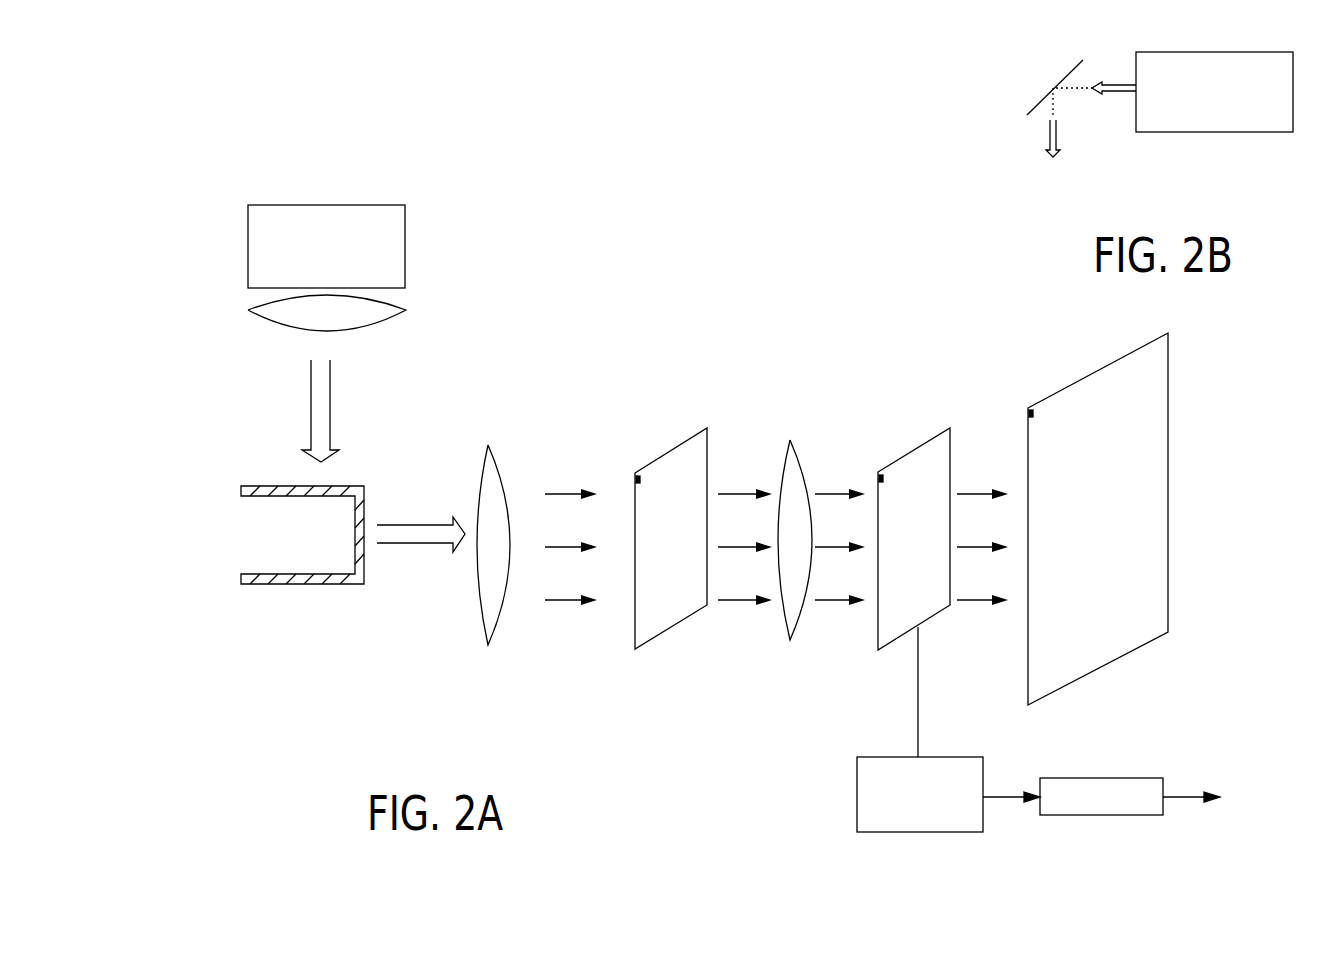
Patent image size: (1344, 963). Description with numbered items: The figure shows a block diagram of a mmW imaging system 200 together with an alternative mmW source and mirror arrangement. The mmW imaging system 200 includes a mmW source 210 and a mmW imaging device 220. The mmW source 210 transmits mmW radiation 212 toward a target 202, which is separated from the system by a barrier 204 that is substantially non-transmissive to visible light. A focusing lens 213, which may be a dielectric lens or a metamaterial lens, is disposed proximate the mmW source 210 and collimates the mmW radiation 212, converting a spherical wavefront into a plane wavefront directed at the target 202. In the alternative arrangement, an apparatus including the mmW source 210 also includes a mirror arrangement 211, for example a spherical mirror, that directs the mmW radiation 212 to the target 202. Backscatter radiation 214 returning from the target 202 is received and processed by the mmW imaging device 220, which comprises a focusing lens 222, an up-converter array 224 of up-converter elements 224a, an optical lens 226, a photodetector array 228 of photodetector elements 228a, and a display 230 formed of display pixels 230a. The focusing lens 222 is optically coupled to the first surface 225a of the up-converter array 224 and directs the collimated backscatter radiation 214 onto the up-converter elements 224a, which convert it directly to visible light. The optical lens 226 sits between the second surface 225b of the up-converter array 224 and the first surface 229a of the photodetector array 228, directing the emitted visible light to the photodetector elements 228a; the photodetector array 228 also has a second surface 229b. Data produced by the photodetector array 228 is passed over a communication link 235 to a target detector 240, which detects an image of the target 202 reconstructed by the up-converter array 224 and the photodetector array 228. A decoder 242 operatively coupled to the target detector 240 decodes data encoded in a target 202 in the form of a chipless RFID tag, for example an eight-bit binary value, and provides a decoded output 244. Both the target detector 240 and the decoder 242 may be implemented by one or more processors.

In FIG. 2A, the mmW imaging system 200 is at (795, 295).
In FIG. 2A, the target 202 is at (262, 535).
In FIG. 2B, the target 202 is at (1015, 186).
In FIG. 2A, the barrier 204 is at (262, 486).
In FIG. 2A, the mmW source 210 is at (405, 247).
In FIG. 2B, the mmW source 210 is at (1136, 55).
In FIG. 2B, the mirror arrangement 211 is at (1033, 103).
In FIG. 2A, the mmW radiation 212 is at (330, 400).
In FIG. 2B, the mmW radiation 212 is at (1105, 95).
In FIG. 2A, the focusing lens 213 is at (406, 308).
In FIG. 2A, the backscatter radiation 214 is at (400, 545).
In FIG. 2A, the mmW imaging device 220 is at (625, 695).
In FIG. 2A, the focusing lens 222 is at (495, 458).
In FIG. 2A, the up-converter array 224 is at (707, 448).
In FIG. 2A, the up-converter element 224a is at (640, 484).
In FIG. 2A, the first surface 225a is at (628, 630).
In FIG. 2A, the second surface 225b is at (679, 640).
In FIG. 2A, the optical lens 226 is at (800, 462).
In FIG. 2A, the photodetector array 228 is at (950, 458).
In FIG. 2A, the photodetector element 228a is at (883, 483).
In FIG. 2A, the first surface 229a is at (870, 640).
In FIG. 2A, the second surface 229b is at (939, 634).
In FIG. 2A, the display 230 is at (1168, 410).
In FIG. 2A, the display pixel 230a is at (1033, 418).
In FIG. 2A, the communication link 235 is at (920, 752).
In FIG. 2A, the target detector 240 is at (983, 772).
In FIG. 2A, the decoder 242 is at (1113, 777).
In FIG. 2A, the decoder output 244 is at (1183, 793).